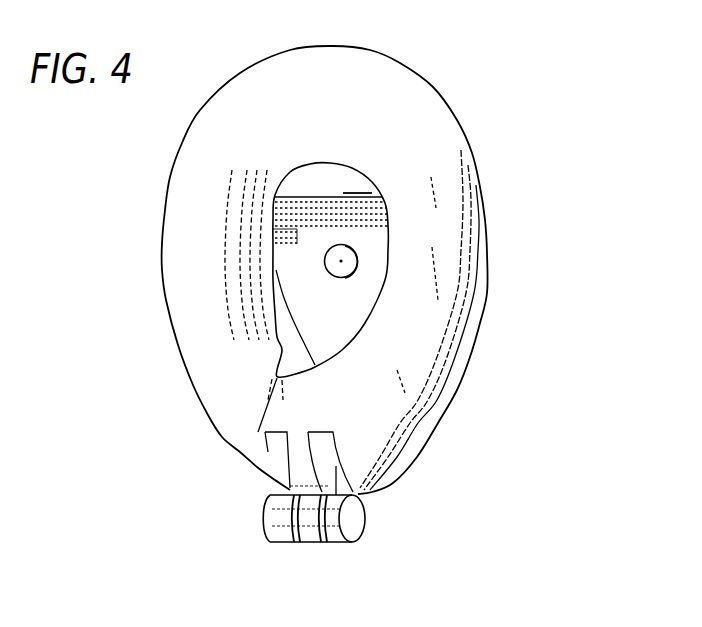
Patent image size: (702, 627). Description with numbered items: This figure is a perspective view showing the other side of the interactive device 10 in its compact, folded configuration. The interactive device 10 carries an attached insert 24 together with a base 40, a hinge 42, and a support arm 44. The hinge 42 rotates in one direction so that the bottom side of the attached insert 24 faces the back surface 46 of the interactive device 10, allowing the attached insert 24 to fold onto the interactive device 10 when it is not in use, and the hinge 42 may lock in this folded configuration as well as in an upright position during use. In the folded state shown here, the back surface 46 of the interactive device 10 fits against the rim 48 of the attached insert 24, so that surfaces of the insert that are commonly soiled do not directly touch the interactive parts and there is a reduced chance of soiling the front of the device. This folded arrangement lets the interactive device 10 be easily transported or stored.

The interactive device 10 is at (354, 274).
The attached insert 24 is at (396, 358).
The base 40 is at (298, 450).
The hinge 42 is at (362, 520).
The support arm 44 is at (368, 492).
The back surface 46 is at (360, 214).
The rim 48 is at (270, 250).